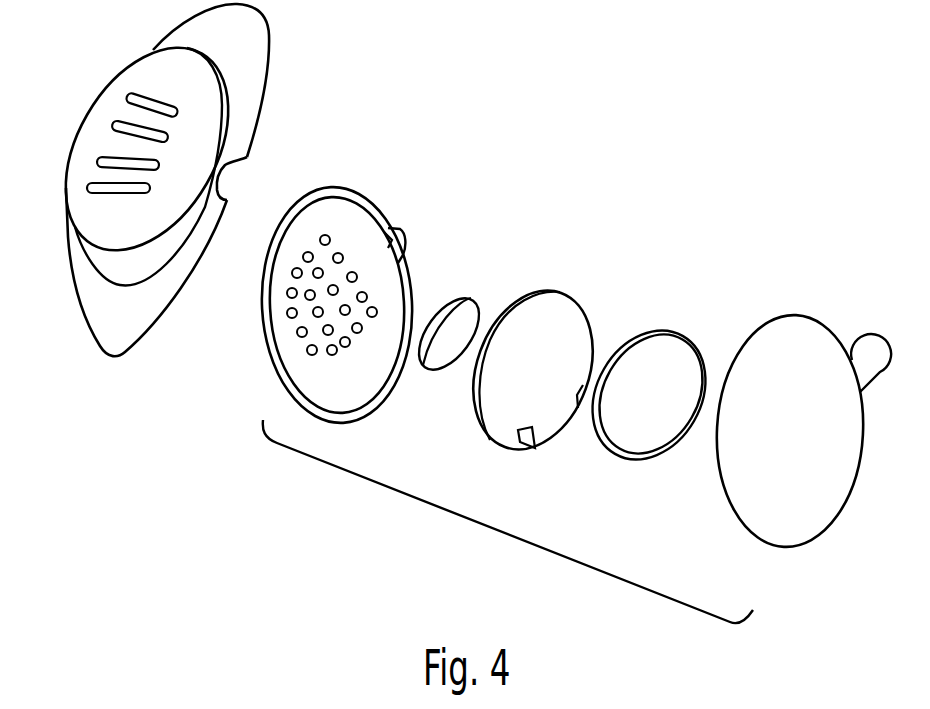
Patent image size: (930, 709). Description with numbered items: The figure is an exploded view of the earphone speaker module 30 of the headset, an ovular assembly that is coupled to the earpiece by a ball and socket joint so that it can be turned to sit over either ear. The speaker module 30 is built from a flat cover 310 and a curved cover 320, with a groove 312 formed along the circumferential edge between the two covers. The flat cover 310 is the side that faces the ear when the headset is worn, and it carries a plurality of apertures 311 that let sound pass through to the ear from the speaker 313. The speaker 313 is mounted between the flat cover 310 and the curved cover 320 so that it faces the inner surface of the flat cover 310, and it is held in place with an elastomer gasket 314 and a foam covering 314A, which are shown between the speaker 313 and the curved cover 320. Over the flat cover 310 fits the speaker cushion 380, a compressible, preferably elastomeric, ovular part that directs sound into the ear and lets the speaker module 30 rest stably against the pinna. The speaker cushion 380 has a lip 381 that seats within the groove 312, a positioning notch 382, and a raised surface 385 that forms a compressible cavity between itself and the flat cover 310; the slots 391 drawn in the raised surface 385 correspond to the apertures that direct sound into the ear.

The speaker module 30 is at (498, 533).
The flat cover 310 is at (347, 187).
The apertures 311 is at (348, 346).
The groove 312 is at (277, 360).
The speaker 313 is at (498, 427).
The elastomer gasket 314 is at (607, 457).
The foam covering 314A is at (465, 302).
The curved cover 320 is at (752, 532).
The speaker cushion 380 is at (97, 330).
The lip 381 is at (267, 88).
The positioning notch 382 is at (222, 177).
The raised surface 385 is at (87, 133).
The slots 391 is at (112, 123).